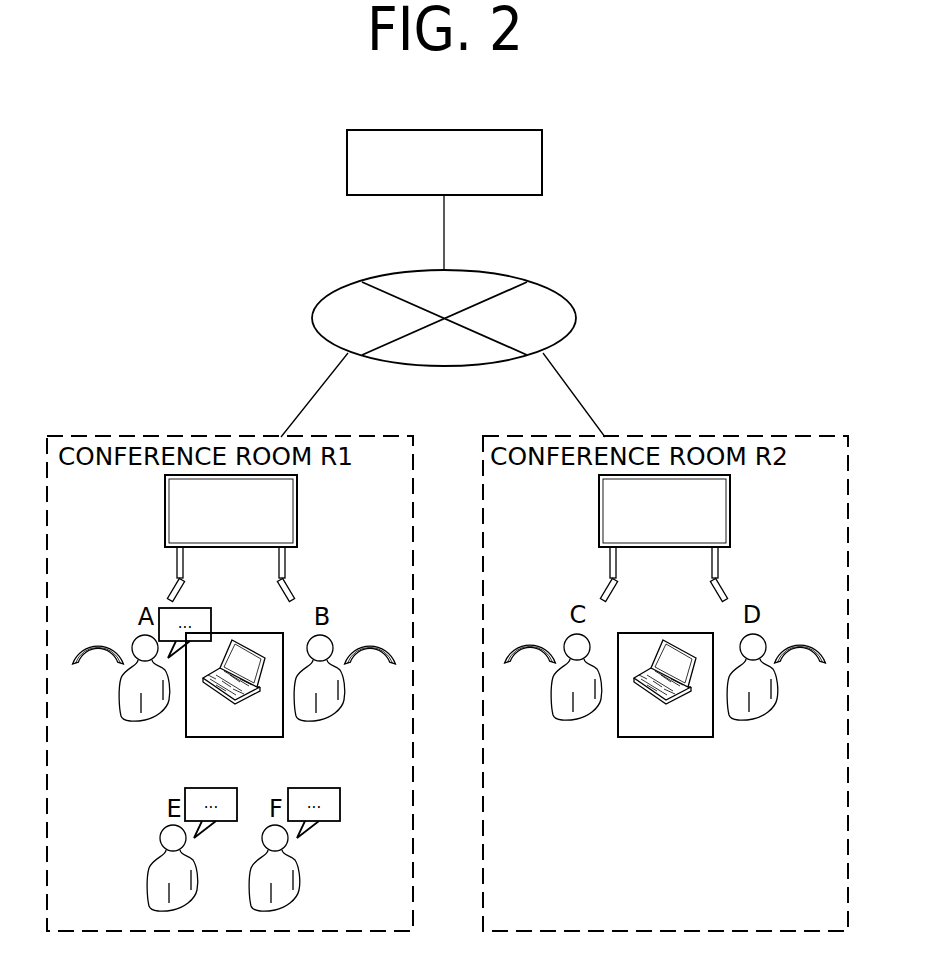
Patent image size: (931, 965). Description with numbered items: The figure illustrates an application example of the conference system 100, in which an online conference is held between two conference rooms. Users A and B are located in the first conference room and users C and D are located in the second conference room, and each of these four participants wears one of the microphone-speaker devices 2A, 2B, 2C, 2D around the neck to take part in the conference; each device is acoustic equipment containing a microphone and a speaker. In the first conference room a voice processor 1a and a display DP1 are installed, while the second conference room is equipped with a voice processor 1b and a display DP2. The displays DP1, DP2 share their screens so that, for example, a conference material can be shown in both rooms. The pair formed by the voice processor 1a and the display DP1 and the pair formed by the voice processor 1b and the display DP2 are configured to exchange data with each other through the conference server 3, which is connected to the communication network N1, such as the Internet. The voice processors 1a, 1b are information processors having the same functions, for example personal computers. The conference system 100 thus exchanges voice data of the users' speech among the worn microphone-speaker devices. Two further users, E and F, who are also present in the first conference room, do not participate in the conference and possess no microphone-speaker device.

The conference system 100 is at (691, 139).
The conference server 3 is at (347, 156).
The communication network N1 is at (577, 322).
The display DP1 is at (297, 497).
The display DP2 is at (730, 497).
The voice processor 1a is at (245, 641).
The voice processor 1b is at (673, 641).
The microphone-speaker device 2A is at (90, 626).
The microphone-speaker device 2B is at (375, 626).
The microphone-speaker device 2C is at (522, 626).
The microphone-speaker device 2D is at (803, 626).